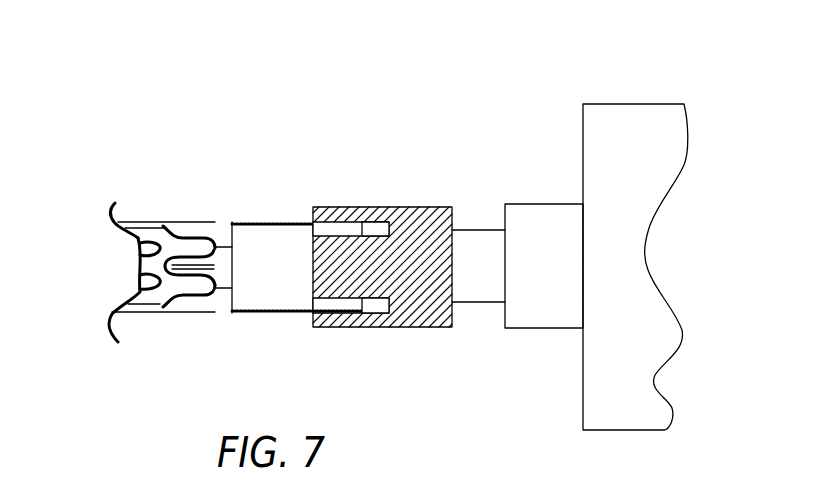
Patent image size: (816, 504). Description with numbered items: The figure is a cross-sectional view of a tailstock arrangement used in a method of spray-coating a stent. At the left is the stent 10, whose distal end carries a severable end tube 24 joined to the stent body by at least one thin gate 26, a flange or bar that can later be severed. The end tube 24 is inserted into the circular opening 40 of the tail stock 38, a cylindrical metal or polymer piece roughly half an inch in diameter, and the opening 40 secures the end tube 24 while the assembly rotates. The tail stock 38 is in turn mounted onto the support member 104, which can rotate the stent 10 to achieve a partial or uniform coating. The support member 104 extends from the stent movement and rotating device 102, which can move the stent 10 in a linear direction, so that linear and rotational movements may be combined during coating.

The stent 10 is at (160, 222).
The end tube 24 is at (263, 313).
The gate 26 is at (232, 247).
The tail stock 38 is at (425, 210).
The circular opening 40 is at (368, 230).
The stent movement and rotating device 102 is at (623, 104).
The support member 104 is at (557, 217).